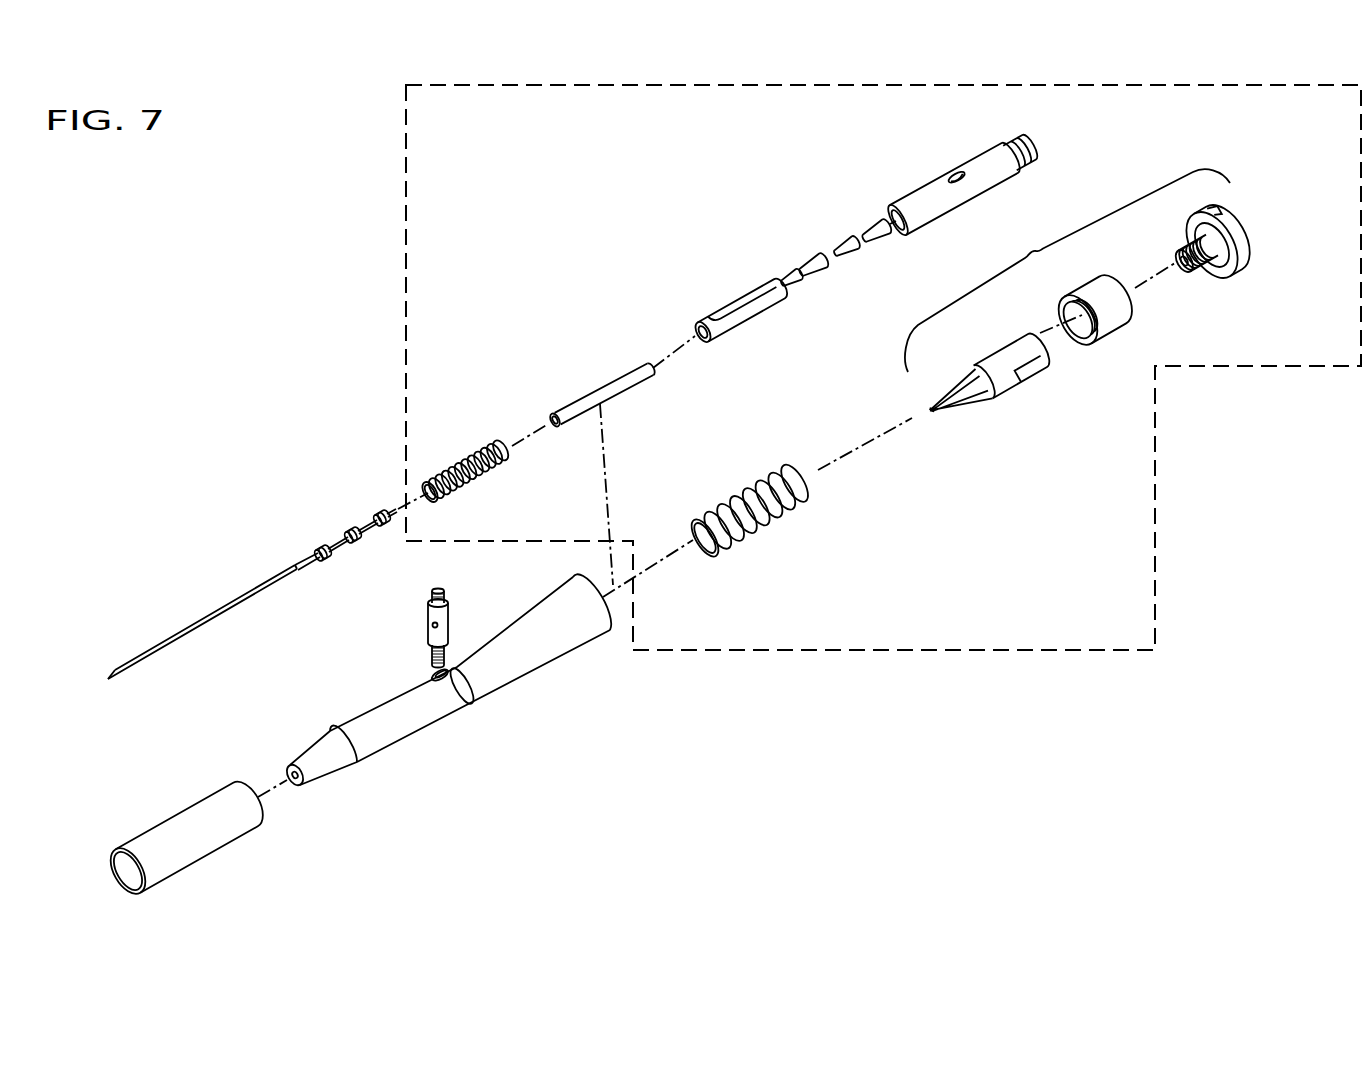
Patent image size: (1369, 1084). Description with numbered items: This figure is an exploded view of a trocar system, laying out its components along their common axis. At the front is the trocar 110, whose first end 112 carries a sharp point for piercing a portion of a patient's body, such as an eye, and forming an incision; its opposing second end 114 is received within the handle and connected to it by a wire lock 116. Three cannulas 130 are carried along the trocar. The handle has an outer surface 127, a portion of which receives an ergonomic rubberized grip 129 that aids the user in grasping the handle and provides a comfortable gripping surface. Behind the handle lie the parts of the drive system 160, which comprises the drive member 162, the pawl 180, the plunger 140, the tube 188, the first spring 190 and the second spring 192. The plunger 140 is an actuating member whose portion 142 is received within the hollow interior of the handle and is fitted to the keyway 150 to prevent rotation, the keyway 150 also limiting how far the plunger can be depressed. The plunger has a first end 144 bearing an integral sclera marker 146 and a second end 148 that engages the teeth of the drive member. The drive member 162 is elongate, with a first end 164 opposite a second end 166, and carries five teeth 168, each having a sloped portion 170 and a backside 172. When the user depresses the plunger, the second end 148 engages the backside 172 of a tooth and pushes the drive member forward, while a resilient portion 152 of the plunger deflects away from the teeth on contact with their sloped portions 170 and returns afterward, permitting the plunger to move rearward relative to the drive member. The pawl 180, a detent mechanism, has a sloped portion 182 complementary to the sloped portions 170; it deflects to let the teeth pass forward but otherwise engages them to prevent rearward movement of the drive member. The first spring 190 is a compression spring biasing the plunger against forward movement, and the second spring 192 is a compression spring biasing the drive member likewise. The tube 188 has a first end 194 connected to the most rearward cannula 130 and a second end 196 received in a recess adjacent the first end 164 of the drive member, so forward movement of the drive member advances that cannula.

The trocar 110 is at (196, 634).
The first end of the trocar 112 is at (107, 677).
The second end of the trocar 114 is at (293, 568).
The wire lock 116 is at (418, 575).
The outer surface of the handle 127 is at (410, 722).
The ergonomic rubberized grip 129 is at (181, 871).
The cannula 130 is at (376, 506).
The plunger 140 is at (1251, 256).
The portion of the plunger 142 is at (1003, 392).
The first end of the plunger 144 is at (1195, 255).
The sclera marker 146 is at (1214, 211).
The second end of the plunger 148 is at (946, 425).
The keyway 150 is at (1099, 276).
The portion of the plunger 152 is at (958, 412).
The drive system 160 is at (968, 651).
The drive member 162 is at (732, 276).
The first end of the drive member 164 is at (702, 331).
The second end of the drive member 166 is at (887, 224).
The teeth 168 is at (825, 246).
The sloped portion 170 is at (805, 283).
The backside 172 is at (827, 268).
The pawl 180 is at (964, 167).
The sloped portion of the pawl 182 is at (1021, 152).
The tube 188 is at (574, 371).
The first spring 190 is at (790, 535).
The second spring 192 is at (484, 445).
The first end of the tube 194 is at (555, 420).
The second end of the tube 196 is at (651, 368).